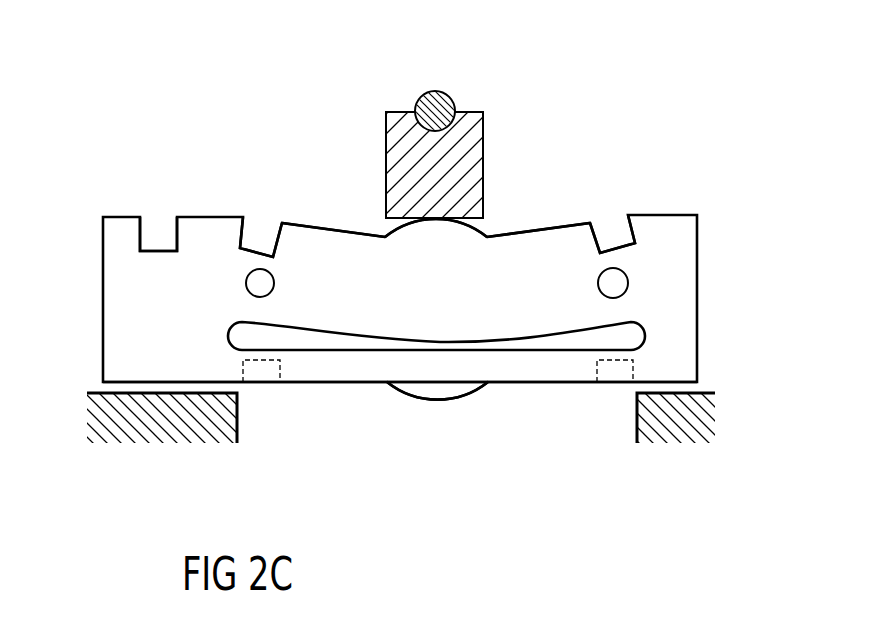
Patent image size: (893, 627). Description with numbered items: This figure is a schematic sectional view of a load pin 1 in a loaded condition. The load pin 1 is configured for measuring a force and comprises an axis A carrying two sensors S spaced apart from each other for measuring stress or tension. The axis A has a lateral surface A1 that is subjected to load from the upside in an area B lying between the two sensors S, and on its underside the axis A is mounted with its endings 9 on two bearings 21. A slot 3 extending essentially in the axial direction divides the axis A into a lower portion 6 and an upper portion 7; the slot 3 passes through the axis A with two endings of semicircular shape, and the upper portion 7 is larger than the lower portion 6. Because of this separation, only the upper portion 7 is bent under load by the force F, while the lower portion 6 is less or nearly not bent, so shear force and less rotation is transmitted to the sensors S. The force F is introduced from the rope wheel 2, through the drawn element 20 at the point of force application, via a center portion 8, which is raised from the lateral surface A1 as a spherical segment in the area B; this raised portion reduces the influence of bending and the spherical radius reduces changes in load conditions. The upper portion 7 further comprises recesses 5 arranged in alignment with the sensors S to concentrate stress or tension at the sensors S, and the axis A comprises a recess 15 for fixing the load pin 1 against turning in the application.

The load pin 1 is at (578, 260).
The rope wheel 2 is at (468, 110).
The slot 3 is at (630, 337).
The recesses 5 is at (265, 228).
The lower portion 6 is at (398, 373).
The upper portion 7 is at (345, 260).
The center portion 8 is at (483, 233).
The endings 9 is at (177, 382).
The recess 15 is at (158, 230).
The ball 20 is at (430, 92).
The bearings 21 is at (103, 423).
The axis A is at (680, 318).
The lateral surface A1 is at (532, 260).
The area B is at (428, 223).
The force F is at (435, 91).
The sensors S is at (258, 283).